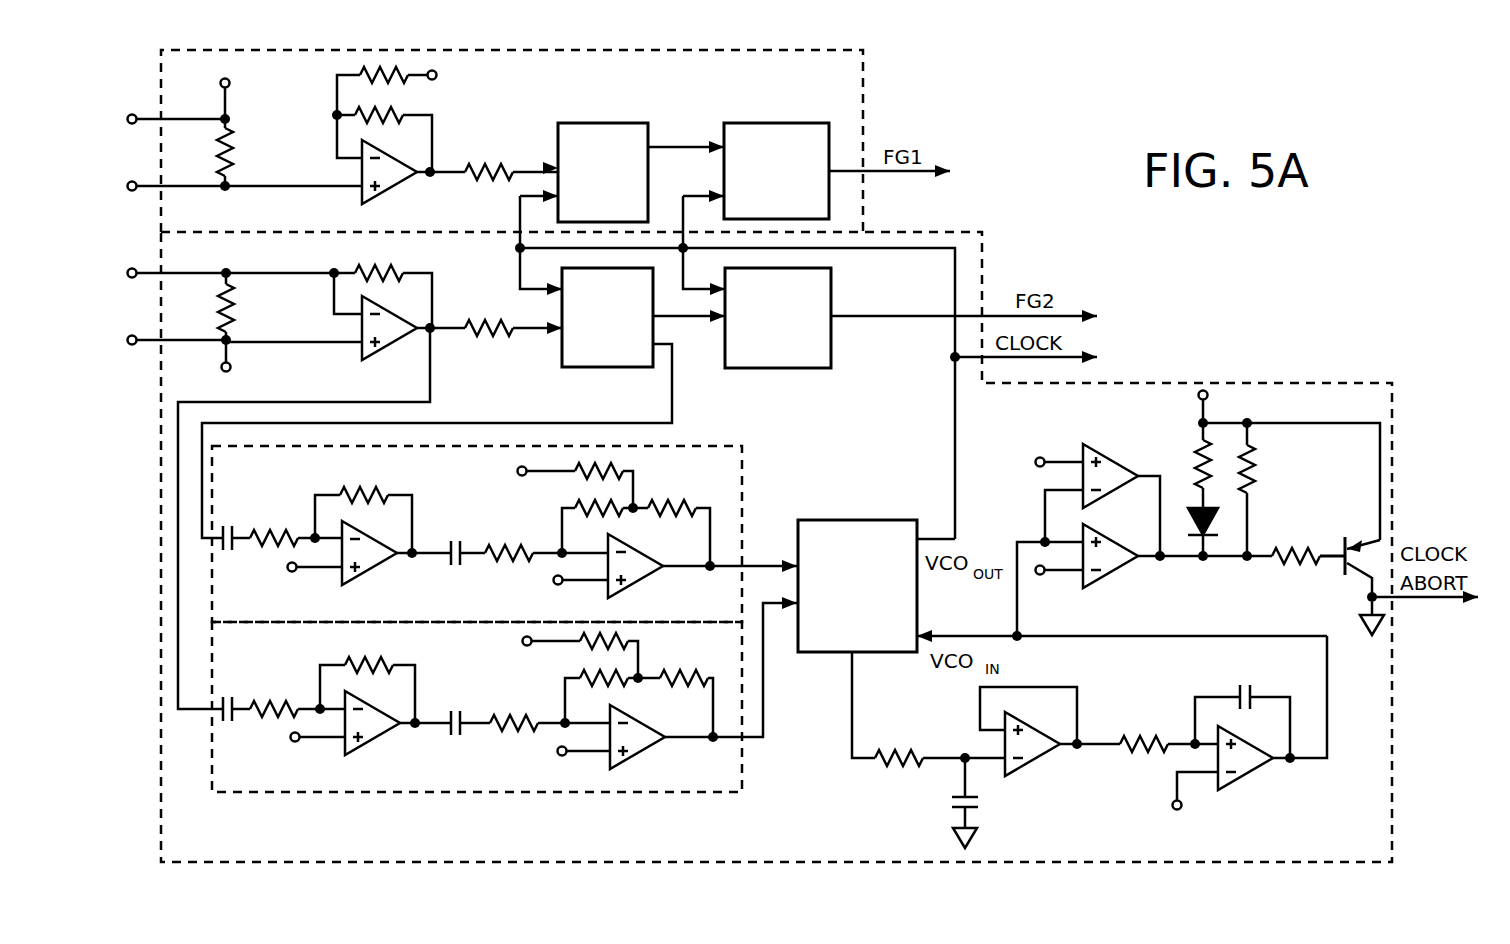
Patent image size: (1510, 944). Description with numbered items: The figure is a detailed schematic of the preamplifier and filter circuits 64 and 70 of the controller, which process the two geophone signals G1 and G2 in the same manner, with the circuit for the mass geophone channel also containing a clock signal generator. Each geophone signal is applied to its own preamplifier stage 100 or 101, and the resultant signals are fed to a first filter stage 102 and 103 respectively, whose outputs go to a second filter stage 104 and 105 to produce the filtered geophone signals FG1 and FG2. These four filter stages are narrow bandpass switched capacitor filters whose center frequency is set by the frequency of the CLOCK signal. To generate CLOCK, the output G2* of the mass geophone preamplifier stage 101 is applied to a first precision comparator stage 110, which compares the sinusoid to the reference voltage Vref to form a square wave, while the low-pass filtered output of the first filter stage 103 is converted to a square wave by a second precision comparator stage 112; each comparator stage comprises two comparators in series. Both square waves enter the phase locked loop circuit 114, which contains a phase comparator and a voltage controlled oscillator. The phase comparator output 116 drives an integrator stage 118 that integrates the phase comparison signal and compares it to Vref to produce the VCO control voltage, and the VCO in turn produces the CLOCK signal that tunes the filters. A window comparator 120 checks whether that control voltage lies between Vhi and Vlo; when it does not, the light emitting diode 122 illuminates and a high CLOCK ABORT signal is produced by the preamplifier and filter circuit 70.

The preamplifier and filter circuit 64 is at (863, 108).
The preamplifier and filter circuit 70 is at (984, 275).
The preamplifier stage 100 is at (310, 149).
The preamplifier stage 101 is at (302, 319).
The first filter stage 102 is at (625, 125).
The first filter stage 103 is at (618, 370).
The second filter stage 104 is at (815, 122).
The second filter stage 105 is at (802, 370).
The first precision comparator stage 110 is at (495, 792).
The second precision comparator stage 112 is at (742, 480).
The phase locked loop circuit 114 is at (881, 520).
The phase comparator output 116 is at (852, 672).
The integrator stage 118 is at (1075, 784).
The window comparator 120 is at (1144, 458).
The light emitting diode 122 is at (1208, 538).